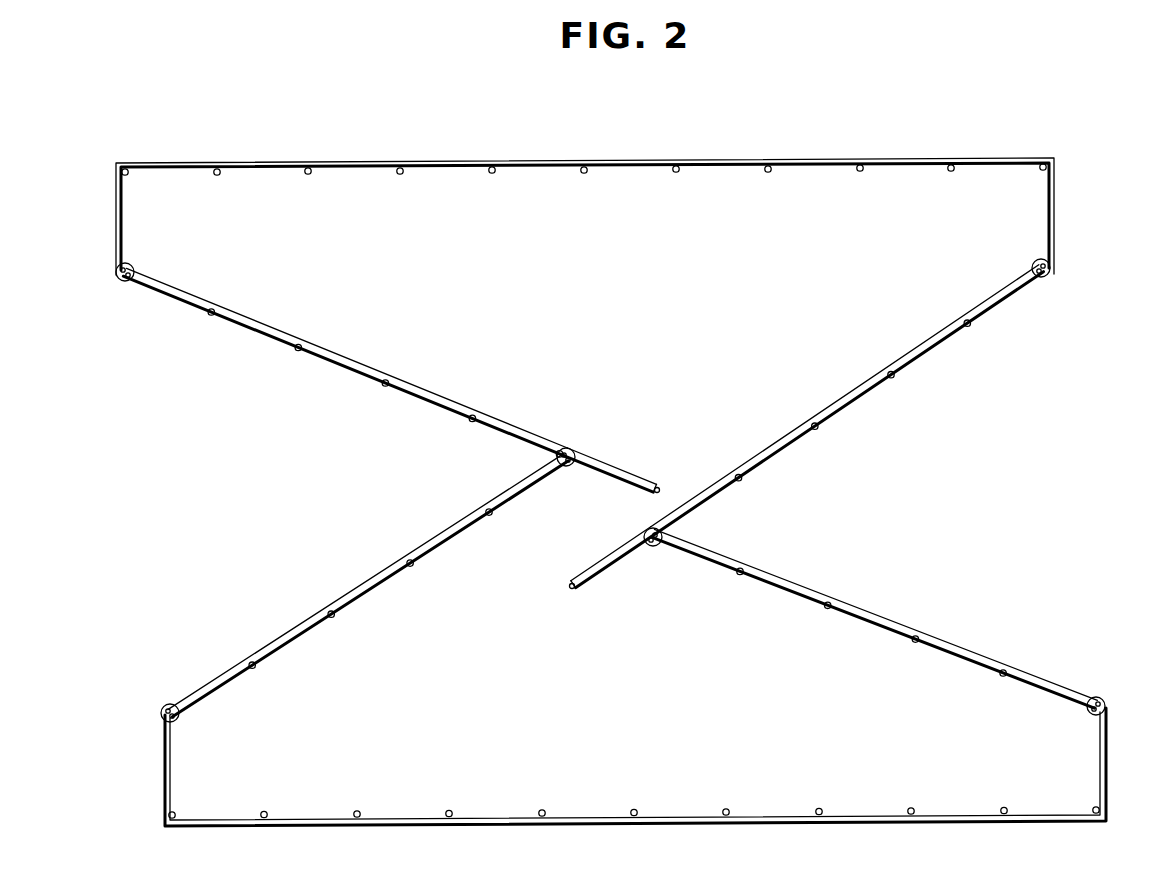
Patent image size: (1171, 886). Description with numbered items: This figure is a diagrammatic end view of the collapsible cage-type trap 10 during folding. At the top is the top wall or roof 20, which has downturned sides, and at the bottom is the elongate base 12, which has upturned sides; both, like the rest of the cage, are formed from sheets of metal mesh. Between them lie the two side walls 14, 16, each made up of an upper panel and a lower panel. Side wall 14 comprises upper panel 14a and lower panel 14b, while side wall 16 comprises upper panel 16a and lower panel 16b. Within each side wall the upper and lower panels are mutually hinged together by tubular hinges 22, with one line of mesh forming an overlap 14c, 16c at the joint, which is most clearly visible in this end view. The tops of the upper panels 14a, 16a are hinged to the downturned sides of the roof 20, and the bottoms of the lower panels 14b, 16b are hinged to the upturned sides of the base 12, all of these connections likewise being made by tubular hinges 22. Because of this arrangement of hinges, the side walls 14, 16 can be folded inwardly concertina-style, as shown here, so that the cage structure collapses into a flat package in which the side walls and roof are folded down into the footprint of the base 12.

The collapsible cage-type trap 10 is at (252, 137).
The elongate base 12 is at (765, 825).
The side wall 14 is at (372, 397).
The upper panel 14a is at (258, 325).
The lower panel 14b is at (285, 627).
The overlap 14c is at (634, 470).
The side wall 16 is at (808, 464).
The upper panel 16a is at (913, 352).
The lower panel 16b is at (938, 640).
The overlap 16c is at (607, 556).
The top wall or roof 20 is at (514, 161).
The tubular hinges 22 is at (127, 283).